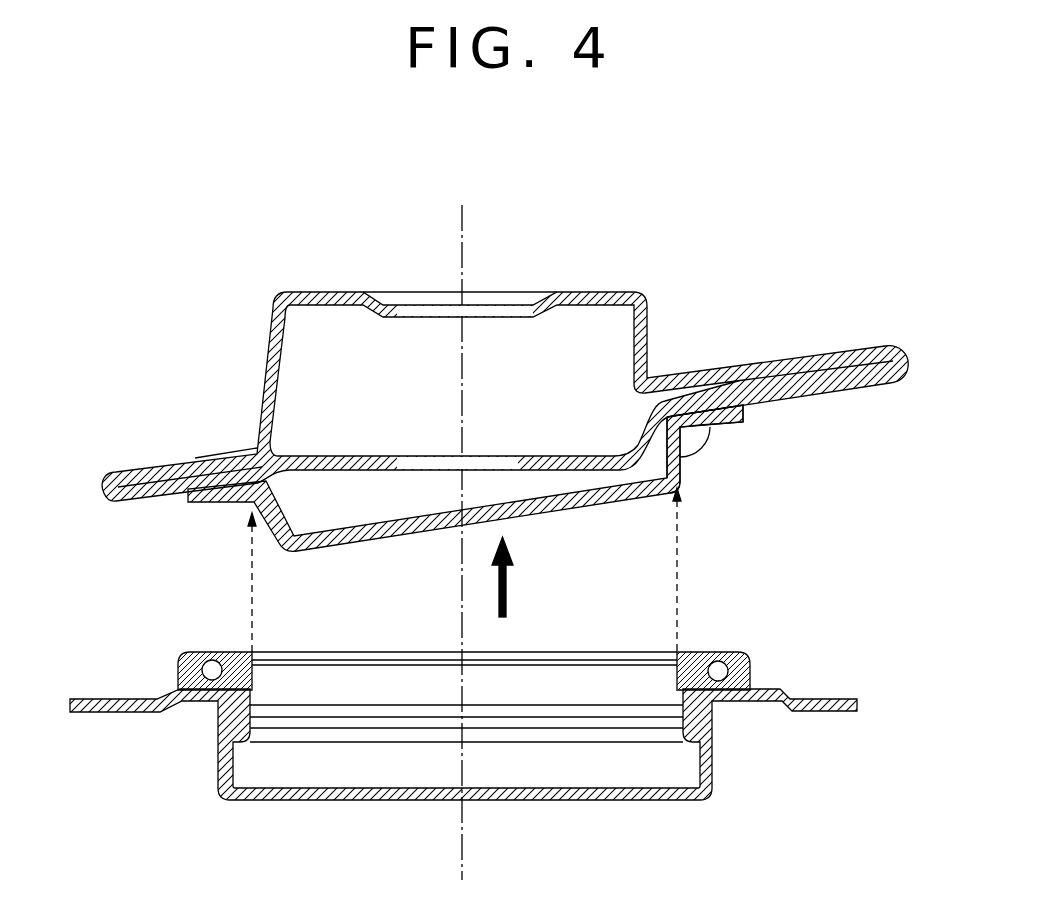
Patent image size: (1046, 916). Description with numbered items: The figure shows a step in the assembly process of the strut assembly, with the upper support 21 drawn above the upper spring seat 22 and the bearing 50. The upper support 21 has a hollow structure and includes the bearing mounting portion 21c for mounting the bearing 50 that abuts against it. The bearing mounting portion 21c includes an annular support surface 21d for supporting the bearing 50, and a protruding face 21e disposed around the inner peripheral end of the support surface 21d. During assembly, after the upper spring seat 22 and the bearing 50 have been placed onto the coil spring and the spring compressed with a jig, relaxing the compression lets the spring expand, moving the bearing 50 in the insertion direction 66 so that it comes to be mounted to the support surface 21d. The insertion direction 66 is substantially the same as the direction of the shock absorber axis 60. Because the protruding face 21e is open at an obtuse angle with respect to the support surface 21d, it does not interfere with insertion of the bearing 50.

The upper support 21 is at (652, 260).
The bearing mounting portion 21c is at (743, 414).
The support surface 21d is at (733, 427).
The protruding face 21e is at (680, 463).
The upper spring seat 22 is at (833, 700).
The bearing 50 is at (747, 653).
The shock absorber axis 60 is at (465, 215).
The insertion direction 66 is at (506, 578).